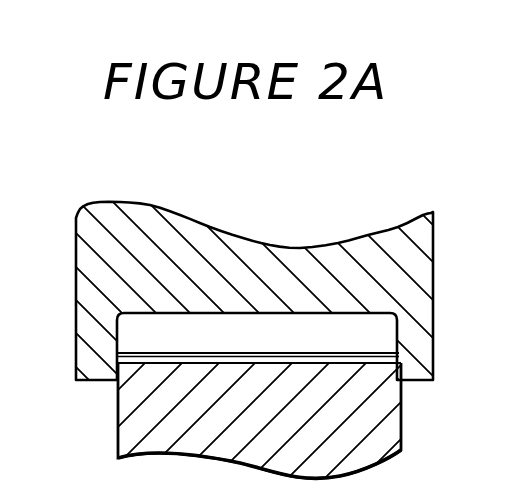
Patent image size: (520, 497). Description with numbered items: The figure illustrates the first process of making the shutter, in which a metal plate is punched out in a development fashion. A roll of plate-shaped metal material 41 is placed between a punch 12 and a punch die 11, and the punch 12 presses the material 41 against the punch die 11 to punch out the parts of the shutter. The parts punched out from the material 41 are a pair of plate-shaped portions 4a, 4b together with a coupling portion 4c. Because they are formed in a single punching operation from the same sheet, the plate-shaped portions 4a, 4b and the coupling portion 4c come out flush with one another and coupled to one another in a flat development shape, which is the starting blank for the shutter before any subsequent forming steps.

The plate-shaped portion 4a is at (328, 353).
The plate-shaped portion 4b is at (163, 352).
The coupling portion 4c is at (250, 356).
The punch die 11 is at (143, 417).
The punch 12 is at (260, 281).
The material 41 is at (367, 353).